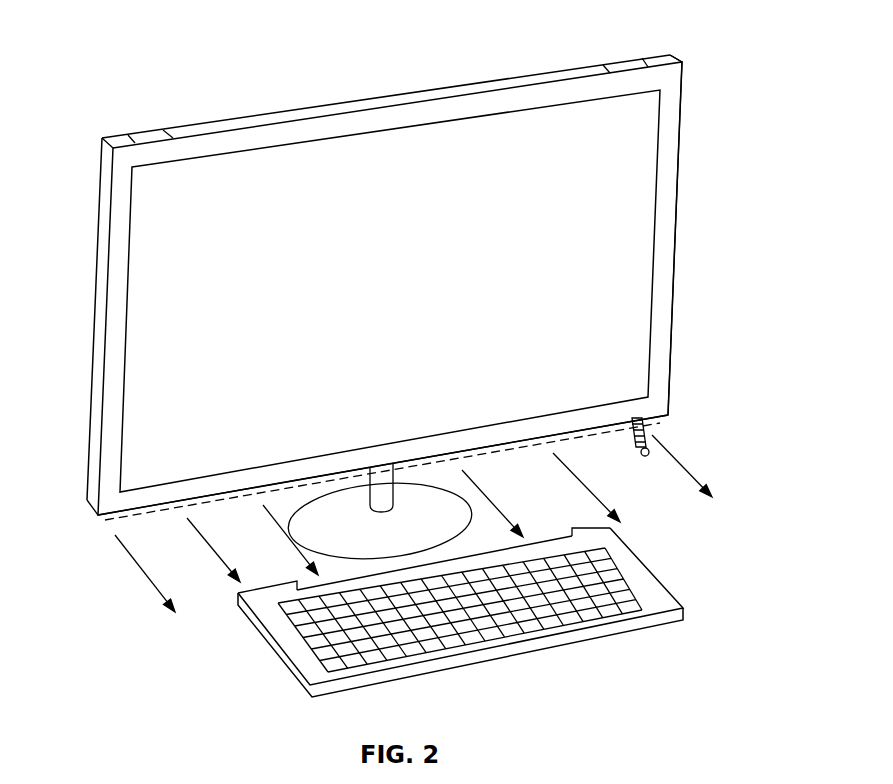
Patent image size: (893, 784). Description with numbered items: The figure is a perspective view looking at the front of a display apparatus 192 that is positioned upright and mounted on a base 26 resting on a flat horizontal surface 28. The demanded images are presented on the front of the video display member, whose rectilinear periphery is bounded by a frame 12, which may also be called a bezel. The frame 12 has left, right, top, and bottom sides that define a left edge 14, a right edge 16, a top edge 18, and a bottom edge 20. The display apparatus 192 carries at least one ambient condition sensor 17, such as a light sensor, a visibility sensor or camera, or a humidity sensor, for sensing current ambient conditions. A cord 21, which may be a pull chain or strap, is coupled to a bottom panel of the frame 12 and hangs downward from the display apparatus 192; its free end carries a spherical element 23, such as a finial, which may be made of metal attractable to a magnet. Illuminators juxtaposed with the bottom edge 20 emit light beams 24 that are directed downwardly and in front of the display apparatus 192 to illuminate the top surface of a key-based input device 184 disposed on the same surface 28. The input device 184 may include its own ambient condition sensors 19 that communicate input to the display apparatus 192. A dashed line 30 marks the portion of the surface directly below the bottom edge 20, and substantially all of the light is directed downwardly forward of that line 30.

The frame 12 is at (668, 243).
The left edge 14 is at (92, 393).
The right edge 16 is at (673, 270).
The ambient condition sensor 17 is at (150, 133).
The top edge 18 is at (253, 117).
The ambient condition sensor 19 is at (260, 588).
The bottom edge 20 is at (117, 516).
The cord 21 is at (633, 440).
The spherical element 23 is at (645, 457).
The light beams 24 is at (160, 593).
The base 26 is at (420, 486).
The flat horizontal surface 28 is at (682, 447).
The dashed line 30 is at (100, 523).
The key-based input device 184 is at (648, 575).
The display apparatus 192 is at (690, 59).